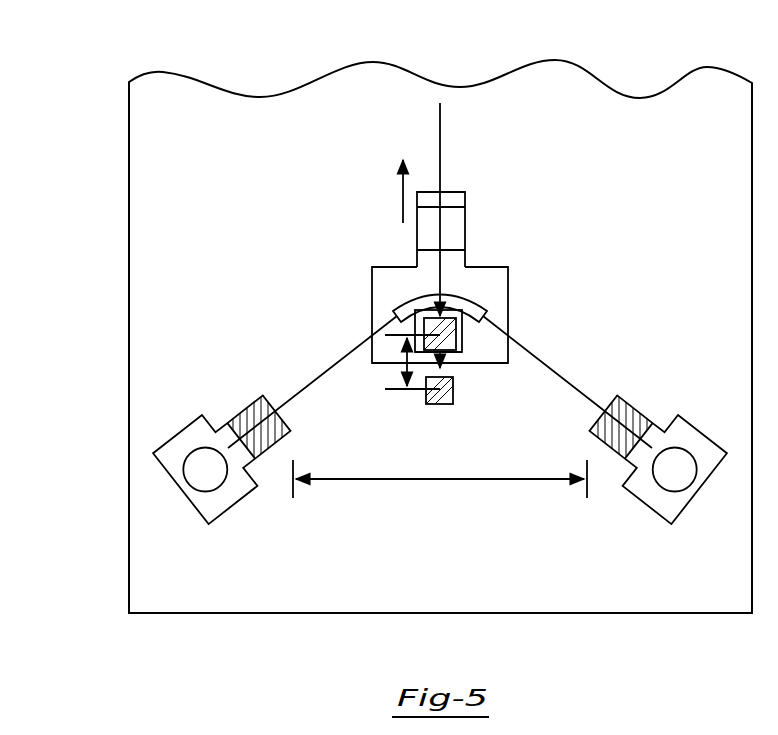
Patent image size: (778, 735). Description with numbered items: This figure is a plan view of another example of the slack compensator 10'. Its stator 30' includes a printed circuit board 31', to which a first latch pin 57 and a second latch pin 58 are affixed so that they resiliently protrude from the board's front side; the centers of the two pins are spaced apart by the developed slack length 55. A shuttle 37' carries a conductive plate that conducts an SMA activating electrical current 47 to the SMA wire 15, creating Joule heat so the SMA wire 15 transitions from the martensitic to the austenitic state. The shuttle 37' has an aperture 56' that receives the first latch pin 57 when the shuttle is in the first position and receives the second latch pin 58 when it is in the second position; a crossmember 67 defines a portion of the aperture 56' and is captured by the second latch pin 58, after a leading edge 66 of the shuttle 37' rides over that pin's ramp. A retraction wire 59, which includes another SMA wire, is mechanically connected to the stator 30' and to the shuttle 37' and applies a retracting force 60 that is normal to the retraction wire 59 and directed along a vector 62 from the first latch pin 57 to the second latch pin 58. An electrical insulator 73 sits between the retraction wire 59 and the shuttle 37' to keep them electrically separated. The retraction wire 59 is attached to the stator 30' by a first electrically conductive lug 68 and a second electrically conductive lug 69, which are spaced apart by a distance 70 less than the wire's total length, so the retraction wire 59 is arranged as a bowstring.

The slack compensator 10' is at (395, 311).
The stator 30' is at (395, 336).
The printed circuit board 31' is at (395, 336).
The SMA wire 15 is at (440, 127).
The SMA activating electrical current 47 is at (400, 197).
The shuttle 37' is at (402, 229).
The electrical insulator 73 is at (398, 302).
The retracting force 60 is at (443, 290).
The aperture 56' is at (483, 331).
The first latch pin 57 is at (457, 347).
The second latch pin 58 is at (440, 406).
The developed slack length 55 is at (402, 357).
The vector 62 is at (430, 358).
The leading edge 66 is at (490, 365).
The crossmember 67 is at (460, 358).
The retraction wire 59 is at (318, 378).
The first electrically conductive lug 68 is at (235, 492).
The second electrically conductive lug 69 is at (645, 492).
The distance 70 is at (440, 485).